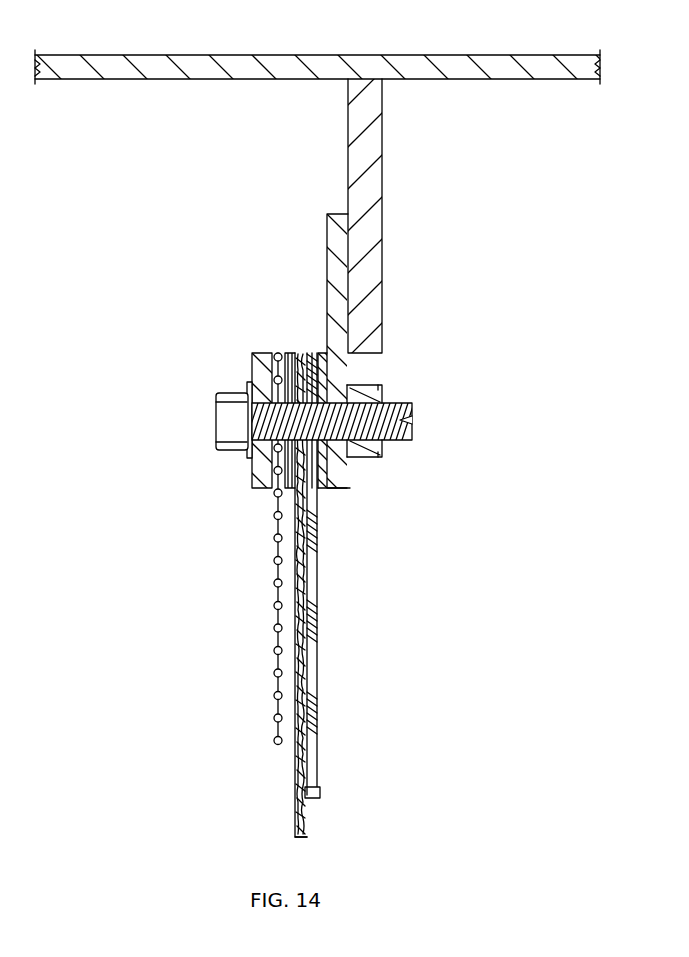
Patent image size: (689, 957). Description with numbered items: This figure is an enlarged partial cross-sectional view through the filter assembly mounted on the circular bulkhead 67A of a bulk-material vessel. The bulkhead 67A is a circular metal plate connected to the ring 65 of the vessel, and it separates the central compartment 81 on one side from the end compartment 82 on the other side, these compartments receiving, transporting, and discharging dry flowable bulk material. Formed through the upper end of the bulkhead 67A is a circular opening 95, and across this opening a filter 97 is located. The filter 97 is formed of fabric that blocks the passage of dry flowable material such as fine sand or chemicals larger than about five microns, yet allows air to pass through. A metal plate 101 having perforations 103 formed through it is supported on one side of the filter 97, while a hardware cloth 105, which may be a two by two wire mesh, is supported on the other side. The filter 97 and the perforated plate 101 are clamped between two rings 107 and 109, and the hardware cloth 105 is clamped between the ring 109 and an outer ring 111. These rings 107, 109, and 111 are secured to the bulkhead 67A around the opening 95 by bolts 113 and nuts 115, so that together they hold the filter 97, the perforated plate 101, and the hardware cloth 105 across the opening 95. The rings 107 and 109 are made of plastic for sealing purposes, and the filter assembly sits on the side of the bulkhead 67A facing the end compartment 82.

The ring 65 is at (382, 143).
The circular bulkhead 67A is at (327, 233).
The circular opening 95 is at (333, 492).
The ring 107 is at (321, 350).
The ring 109 is at (292, 353).
The outer ring 111 is at (252, 372).
The bolt 113 is at (215, 419).
The nut 115 is at (383, 387).
The perforations 103 is at (317, 577).
The perforated metal plate 101 is at (317, 625).
The hardware cloth 105 is at (277, 632).
The filter 97 is at (297, 803).
The end compartment 82 is at (72, 506).
The central compartment 81 is at (512, 507).